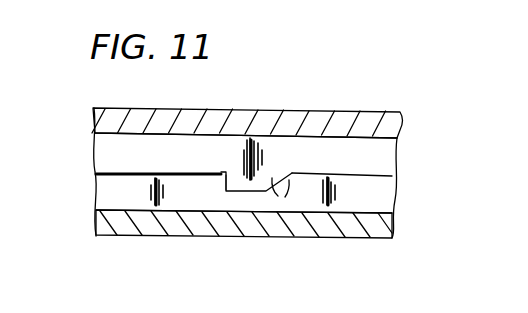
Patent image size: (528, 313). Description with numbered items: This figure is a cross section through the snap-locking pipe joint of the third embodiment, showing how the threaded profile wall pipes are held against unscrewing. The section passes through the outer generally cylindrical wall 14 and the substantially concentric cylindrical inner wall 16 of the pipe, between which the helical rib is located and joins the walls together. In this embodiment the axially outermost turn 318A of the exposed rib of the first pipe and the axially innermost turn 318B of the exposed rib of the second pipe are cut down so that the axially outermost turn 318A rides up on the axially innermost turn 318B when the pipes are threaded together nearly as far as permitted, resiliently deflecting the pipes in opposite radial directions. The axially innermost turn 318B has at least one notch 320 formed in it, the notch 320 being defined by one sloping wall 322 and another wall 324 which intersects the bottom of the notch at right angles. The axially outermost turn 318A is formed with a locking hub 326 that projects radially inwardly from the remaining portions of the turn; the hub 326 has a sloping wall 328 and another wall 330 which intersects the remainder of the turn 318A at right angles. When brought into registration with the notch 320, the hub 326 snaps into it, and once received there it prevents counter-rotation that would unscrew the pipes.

The outer generally cylindrical wall 14 is at (373, 116).
The cylindrical inner wall 16 is at (372, 232).
The axially outermost turn 318A is at (385, 153).
The axially innermost turn 318B is at (381, 197).
The notch 320 is at (214, 183).
The sloping wall 322 is at (214, 182).
The wall 324 is at (278, 196).
The locking hub 326 is at (274, 172).
The sloping wall 328 is at (283, 190).
The wall 330 is at (222, 171).